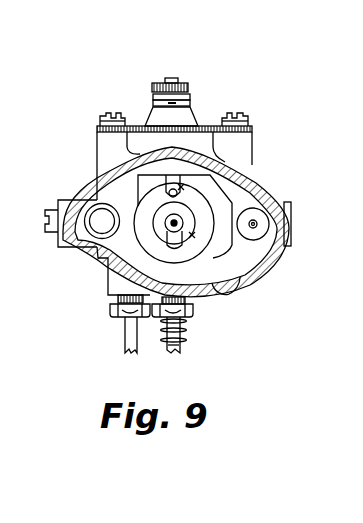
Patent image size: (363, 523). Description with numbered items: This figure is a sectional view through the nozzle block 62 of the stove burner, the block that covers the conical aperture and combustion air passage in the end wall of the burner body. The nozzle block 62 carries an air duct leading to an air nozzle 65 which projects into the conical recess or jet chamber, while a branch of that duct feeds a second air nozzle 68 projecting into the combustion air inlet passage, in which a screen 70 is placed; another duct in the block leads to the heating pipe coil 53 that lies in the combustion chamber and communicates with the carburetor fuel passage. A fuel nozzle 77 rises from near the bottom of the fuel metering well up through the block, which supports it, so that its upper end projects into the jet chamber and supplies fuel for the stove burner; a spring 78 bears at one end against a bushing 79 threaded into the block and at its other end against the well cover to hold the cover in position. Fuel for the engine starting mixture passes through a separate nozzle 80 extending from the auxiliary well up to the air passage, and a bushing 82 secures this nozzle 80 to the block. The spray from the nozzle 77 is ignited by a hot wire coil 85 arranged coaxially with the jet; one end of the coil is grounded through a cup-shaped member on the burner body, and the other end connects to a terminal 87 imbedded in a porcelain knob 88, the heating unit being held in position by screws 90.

The heating pipe coil 53 is at (90, 210).
The nozzle block 62 is at (255, 142).
The air nozzle 65 is at (181, 236).
The air nozzle 68 is at (257, 212).
The screen 70 is at (287, 206).
The nozzle 77 is at (176, 221).
The spring 78 is at (187, 339).
The bushing 79 is at (193, 308).
The nozzle 80 is at (124, 338).
The bushing 82 is at (110, 309).
The hot wire coil 85 is at (168, 192).
The terminal 87 is at (188, 86).
The porcelain knob 88 is at (185, 121).
The screws 90 is at (119, 116).